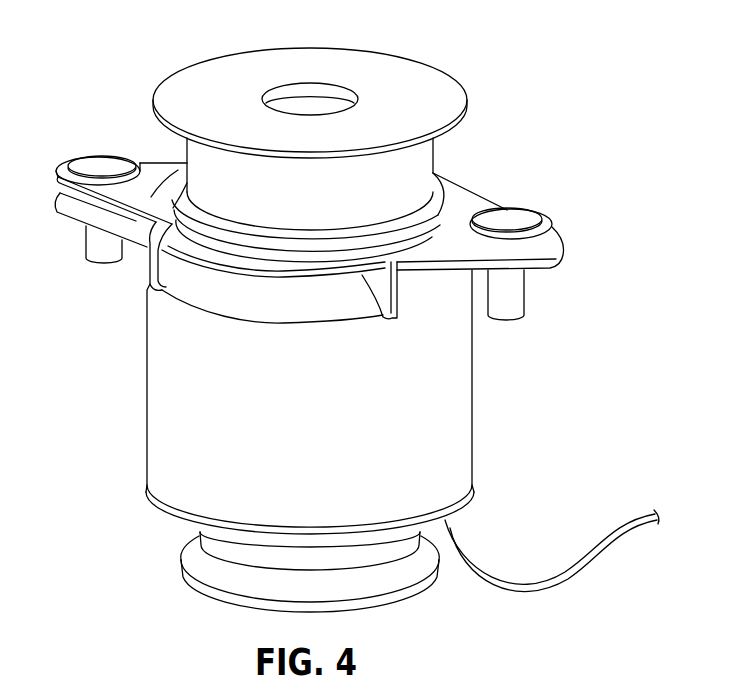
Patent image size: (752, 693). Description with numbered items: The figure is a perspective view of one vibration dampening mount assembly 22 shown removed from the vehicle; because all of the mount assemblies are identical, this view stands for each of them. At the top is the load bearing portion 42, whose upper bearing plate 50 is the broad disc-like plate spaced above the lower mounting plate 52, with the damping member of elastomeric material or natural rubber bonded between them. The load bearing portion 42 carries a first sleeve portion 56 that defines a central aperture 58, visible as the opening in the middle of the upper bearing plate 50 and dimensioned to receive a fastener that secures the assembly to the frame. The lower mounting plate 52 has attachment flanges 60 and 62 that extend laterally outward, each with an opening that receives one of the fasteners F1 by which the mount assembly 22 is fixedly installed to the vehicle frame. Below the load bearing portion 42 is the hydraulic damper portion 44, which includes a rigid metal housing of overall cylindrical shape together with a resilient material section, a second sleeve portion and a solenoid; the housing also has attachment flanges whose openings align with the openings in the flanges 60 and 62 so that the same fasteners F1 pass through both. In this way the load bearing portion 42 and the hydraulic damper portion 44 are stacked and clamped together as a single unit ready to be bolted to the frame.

The vibration dampening mount assembly 22 is at (528, 148).
The load bearing portion 42 is at (420, 92).
The hydraulic damper portion 44 is at (147, 345).
The upper bearing plate 50 is at (208, 80).
The lower mounting plate 52 is at (157, 160).
The first sleeve portion 56 is at (318, 105).
The central aperture 58 is at (289, 105).
The attachment flange 60 is at (188, 168).
The attachment flange 62 is at (463, 210).
The fasteners F1 is at (548, 188).